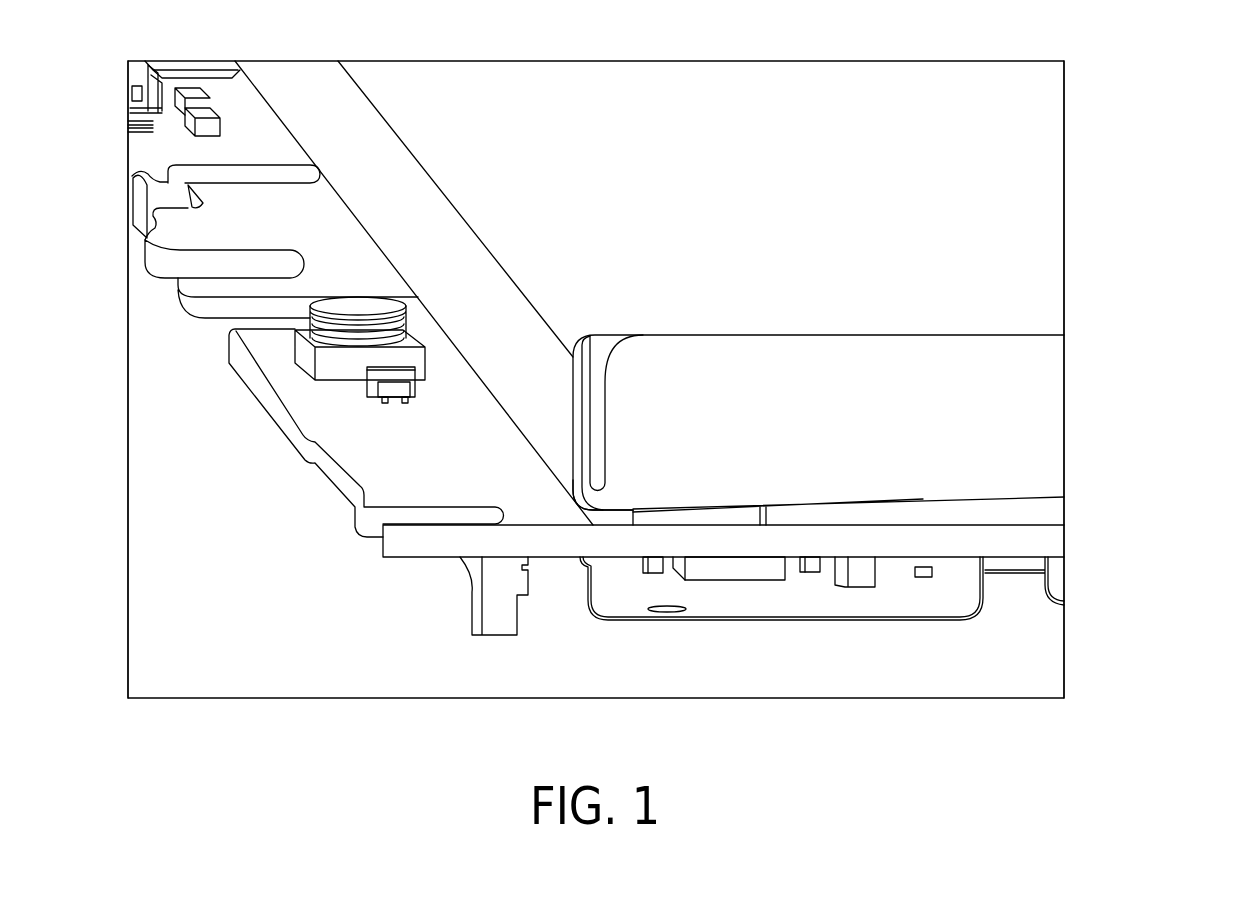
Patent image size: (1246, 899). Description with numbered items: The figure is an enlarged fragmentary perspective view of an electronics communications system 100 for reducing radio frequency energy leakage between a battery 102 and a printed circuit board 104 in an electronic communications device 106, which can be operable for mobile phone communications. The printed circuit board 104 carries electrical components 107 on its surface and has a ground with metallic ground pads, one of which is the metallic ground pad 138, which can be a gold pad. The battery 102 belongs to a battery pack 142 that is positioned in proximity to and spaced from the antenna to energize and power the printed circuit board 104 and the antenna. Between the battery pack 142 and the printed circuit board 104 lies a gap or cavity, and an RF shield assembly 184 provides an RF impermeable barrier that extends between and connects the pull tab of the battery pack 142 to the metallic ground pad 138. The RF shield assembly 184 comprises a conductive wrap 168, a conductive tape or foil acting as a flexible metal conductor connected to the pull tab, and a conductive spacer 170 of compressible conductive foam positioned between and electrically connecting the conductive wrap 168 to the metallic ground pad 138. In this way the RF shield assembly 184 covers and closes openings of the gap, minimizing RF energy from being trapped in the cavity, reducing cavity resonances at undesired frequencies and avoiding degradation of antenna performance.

The electronics communications system 100 is at (1148, 50).
The RF shield assembly 184 is at (994, 70).
The conductive wrap 168 is at (1052, 216).
The battery 102 is at (1052, 415).
The printed circuit board 104 is at (1055, 538).
The electronic communications device 106 is at (138, 605).
The electrical components 107 is at (343, 319).
The battery pack 142 is at (593, 510).
The conductive spacer 170 is at (648, 517).
The metallic ground pad 138 is at (768, 520).